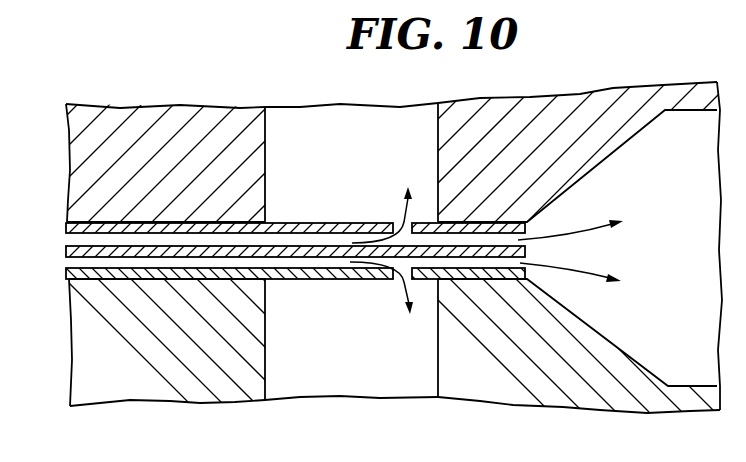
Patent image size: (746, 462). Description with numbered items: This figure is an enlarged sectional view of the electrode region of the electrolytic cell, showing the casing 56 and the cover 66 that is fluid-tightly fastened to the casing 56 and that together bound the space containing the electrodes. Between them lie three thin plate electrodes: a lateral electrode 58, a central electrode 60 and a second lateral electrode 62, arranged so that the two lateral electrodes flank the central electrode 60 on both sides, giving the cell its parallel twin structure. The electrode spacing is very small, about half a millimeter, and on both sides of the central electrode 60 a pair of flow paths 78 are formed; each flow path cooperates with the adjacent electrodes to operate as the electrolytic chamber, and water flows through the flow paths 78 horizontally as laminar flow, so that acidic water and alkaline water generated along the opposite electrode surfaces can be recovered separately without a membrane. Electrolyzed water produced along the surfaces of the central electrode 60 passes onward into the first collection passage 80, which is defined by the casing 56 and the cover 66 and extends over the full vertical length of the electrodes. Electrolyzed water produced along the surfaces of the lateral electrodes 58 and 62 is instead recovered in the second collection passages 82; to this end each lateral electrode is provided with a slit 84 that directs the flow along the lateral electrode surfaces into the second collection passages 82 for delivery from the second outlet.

The casing 56 is at (169, 372).
The lateral electrode 58 is at (66, 221).
The central electrode 60 is at (67, 250).
The second lateral electrode 62 is at (67, 293).
The cover 66 is at (205, 127).
The flow paths 78 is at (67, 233).
The first collection passage 80 is at (687, 223).
The second collection passages 82 is at (313, 147).
The slit 84 is at (399, 218).